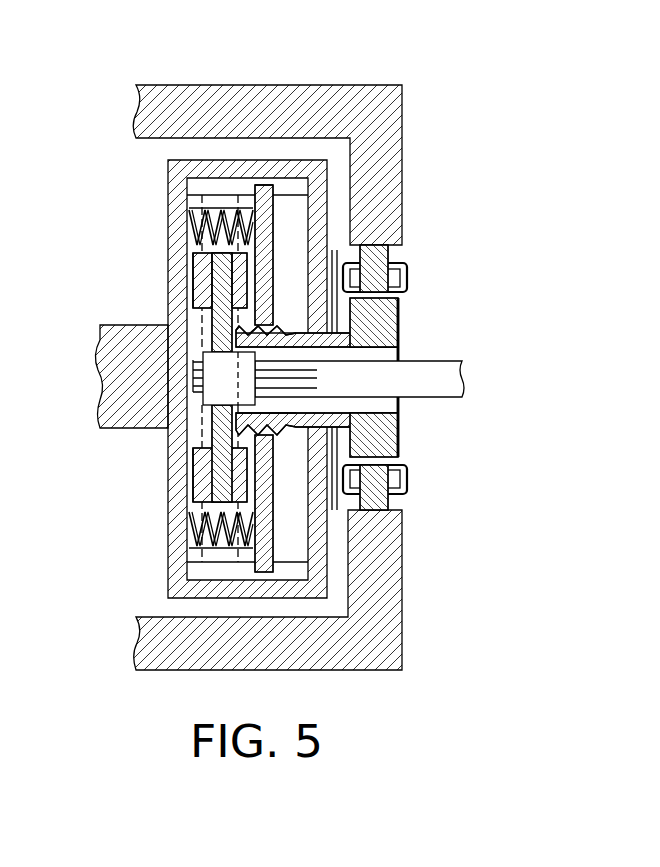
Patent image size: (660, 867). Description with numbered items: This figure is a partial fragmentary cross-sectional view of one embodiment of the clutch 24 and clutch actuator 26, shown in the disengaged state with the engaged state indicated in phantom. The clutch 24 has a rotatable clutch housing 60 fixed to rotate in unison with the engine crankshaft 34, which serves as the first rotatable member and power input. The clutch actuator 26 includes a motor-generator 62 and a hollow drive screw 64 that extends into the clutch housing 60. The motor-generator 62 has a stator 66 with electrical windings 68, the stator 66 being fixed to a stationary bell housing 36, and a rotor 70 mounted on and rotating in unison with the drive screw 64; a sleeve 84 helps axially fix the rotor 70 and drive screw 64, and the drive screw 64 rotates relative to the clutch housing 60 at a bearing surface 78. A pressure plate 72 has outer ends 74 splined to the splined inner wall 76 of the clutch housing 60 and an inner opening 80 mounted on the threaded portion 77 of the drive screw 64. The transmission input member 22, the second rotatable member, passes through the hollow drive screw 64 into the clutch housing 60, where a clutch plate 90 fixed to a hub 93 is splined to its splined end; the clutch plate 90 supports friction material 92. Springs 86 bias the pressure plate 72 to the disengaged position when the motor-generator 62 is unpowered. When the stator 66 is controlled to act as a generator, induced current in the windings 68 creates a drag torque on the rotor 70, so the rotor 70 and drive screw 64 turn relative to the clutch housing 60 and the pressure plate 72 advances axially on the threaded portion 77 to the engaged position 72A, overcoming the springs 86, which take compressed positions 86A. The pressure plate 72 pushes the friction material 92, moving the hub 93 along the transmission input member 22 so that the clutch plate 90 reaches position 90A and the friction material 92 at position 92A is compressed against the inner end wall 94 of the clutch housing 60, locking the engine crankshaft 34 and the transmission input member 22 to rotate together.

The transmission input member 22 is at (430, 398).
The clutch 24 is at (155, 171).
The clutch actuator 26 is at (430, 291).
The engine crankshaft 34 is at (105, 435).
The bell housing 36 is at (402, 113).
The clutch housing 60 is at (170, 574).
The motor-generator 62 is at (424, 469).
The drive screw 64 is at (400, 420).
The stator 66 is at (397, 252).
The electrical windings 68 is at (405, 278).
The rotor 70 is at (400, 316).
The pressure plate 72 is at (273, 227).
The engaged position 72A is at (232, 566).
The outer ends 74 is at (263, 185).
The splined inner wall 76 is at (196, 199).
The threaded portion 77 is at (278, 322).
The bearing surface 78 is at (320, 413).
The inner opening 80 is at (280, 425).
The sleeve 84 is at (333, 262).
The springs 86 is at (205, 537).
The compressed positions 86A is at (177, 524).
The clutch plate 90 is at (210, 328).
The clutch plate engaged position 90A is at (172, 463).
The friction material 92 is at (196, 266).
The friction material engaged position 92A is at (200, 335).
The hub 93 is at (213, 373).
The inner end wall 94 is at (186, 411).